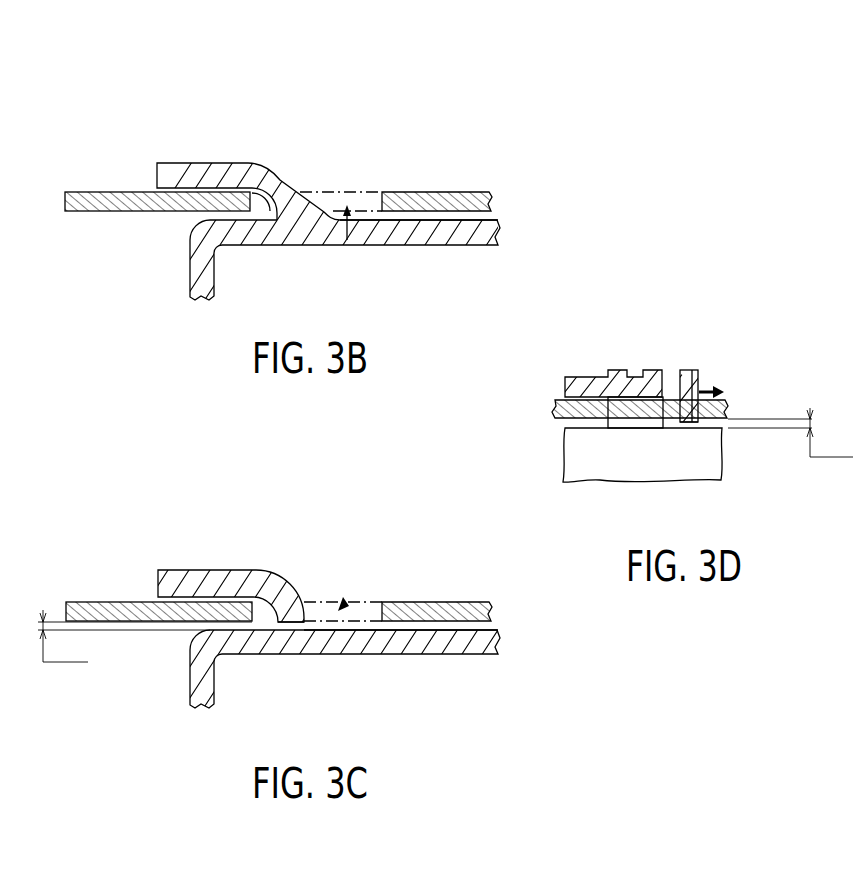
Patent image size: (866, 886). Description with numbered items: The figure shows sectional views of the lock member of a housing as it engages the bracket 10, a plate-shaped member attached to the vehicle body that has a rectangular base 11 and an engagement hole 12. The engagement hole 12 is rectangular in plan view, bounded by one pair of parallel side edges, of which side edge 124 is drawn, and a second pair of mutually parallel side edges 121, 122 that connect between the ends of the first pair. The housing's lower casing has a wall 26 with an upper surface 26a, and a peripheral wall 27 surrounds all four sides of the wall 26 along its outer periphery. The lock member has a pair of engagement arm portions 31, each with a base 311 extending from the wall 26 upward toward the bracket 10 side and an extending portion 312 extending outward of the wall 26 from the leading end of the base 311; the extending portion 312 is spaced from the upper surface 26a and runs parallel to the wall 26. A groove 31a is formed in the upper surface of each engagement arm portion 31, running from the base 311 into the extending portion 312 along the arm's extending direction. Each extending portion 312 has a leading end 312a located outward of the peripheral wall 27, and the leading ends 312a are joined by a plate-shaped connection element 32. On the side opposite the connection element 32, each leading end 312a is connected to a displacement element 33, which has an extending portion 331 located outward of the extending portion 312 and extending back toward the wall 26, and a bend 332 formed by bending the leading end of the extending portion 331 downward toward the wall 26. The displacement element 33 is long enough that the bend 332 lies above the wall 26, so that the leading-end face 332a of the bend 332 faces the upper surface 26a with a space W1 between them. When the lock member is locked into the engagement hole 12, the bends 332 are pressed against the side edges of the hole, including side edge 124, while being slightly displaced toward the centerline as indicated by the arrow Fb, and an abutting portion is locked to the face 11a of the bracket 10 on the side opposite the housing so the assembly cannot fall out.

In FIG. 3B, the bracket 10 is at (72, 192).
In FIG. 3C, the bracket 10 is at (118, 602).
In FIG. 3D, the bracket 10 is at (553, 408).
In FIG. 3B, the base 11 is at (443, 192).
In FIG. 3B, the face 11a is at (99, 192).
In FIG. 3B, the engagement hole 12 is at (347, 240).
In FIG. 3C, the engagement hole 12 is at (342, 602).
In FIG. 3B, the side edge 121 is at (262, 221).
In FIG. 3C, the side edge 121 is at (264, 631).
In FIG. 3B, the side edge 122 is at (380, 198).
In FIG. 3C, the side edge 122 is at (378, 613).
In FIG. 3D, the side edge 124 is at (728, 410).
In FIG. 3B, the wall 26 is at (455, 237).
In FIG. 3C, the wall 26 is at (435, 643).
In FIG. 3D, the wall 26 is at (576, 466).
In FIG. 3B, the upper surface 26a is at (470, 218).
In FIG. 3C, the upper surface 26a is at (460, 629).
In FIG. 3B, the peripheral wall 27 is at (200, 282).
In FIG. 3C, the peripheral wall 27 is at (200, 690).
In FIG. 3B, the engagement arm portion 31 is at (312, 93).
In FIG. 3D, the engagement arm portion 31 is at (614, 368).
In FIG. 3D, the groove 31a is at (637, 373).
In FIG. 3B, the base 311 is at (296, 192).
In FIG. 3B, the extending portion 312 is at (220, 170).
In FIG. 3B, the leading end 312a is at (166, 164).
In FIG. 3D, the connection element 32 is at (567, 388).
In FIG. 3C, the displacement element 33 is at (330, 512).
In FIG. 3D, the displacement element 33 is at (792, 292).
In FIG. 3C, the extending portion 331 is at (238, 587).
In FIG. 3D, the extending portion 331 is at (688, 383).
In FIG. 3C, the bend 332 is at (283, 603).
In FIG. 3D, the bend 332 is at (699, 387).
In FIG. 3C, the leading-end face 332a is at (291, 623).
In FIG. 3D, the leading-end face 332a is at (694, 423).
In FIG. 3C, the space W1 is at (145, 637).
In FIG. 3D, the space W1 is at (790, 432).
In FIG. 3D, the arrow Fb is at (708, 385).